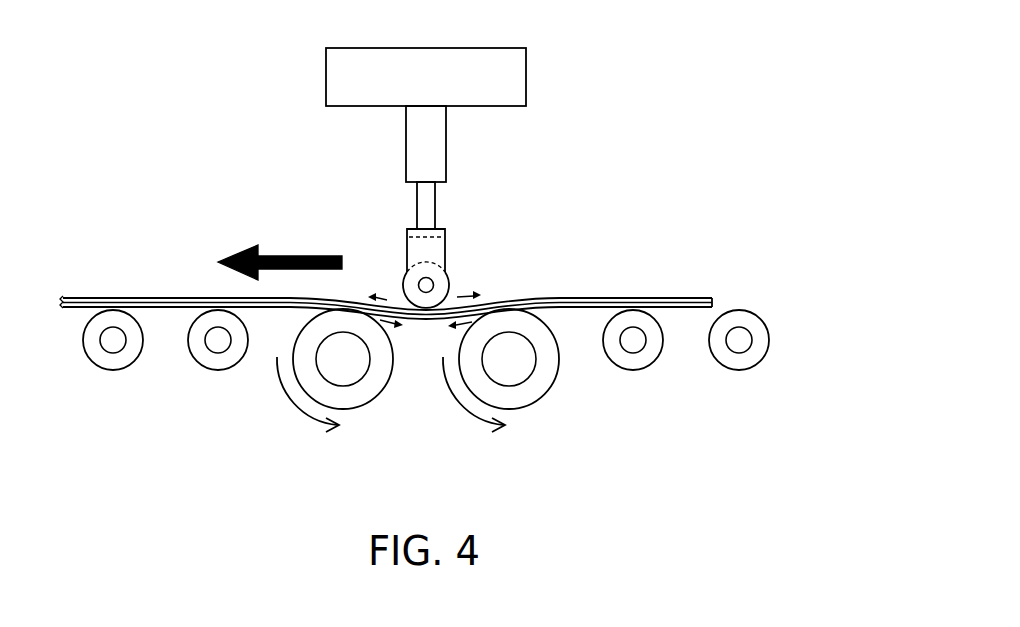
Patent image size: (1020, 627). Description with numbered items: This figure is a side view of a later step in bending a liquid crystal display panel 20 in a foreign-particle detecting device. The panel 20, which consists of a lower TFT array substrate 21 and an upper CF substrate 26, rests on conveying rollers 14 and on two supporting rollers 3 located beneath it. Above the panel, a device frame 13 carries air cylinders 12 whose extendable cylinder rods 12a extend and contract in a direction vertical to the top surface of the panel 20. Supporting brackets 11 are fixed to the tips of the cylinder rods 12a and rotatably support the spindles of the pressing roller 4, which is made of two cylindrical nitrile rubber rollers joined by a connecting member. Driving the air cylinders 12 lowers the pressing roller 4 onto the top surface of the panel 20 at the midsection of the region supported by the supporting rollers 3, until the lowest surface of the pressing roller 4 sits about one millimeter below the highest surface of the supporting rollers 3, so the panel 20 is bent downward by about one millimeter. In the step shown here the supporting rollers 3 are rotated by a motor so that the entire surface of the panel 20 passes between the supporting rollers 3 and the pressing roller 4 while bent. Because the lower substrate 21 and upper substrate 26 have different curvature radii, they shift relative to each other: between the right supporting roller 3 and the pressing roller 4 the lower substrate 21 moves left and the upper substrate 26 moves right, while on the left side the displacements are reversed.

The device frame 13 is at (526, 77).
The air cylinder 12 is at (406, 147).
The cylinder rod 12a is at (417, 185).
The supporting bracket 11 is at (446, 249).
The pressing roller 4 is at (450, 277).
The liquid crystal display panel 20 is at (631, 292).
The upper substrate (CF substrate) 26 is at (716, 299).
The lower substrate (TFT array substrate) 21 is at (718, 306).
The conveying roller 14 is at (128, 366).
The supporting roller 3 is at (373, 398).